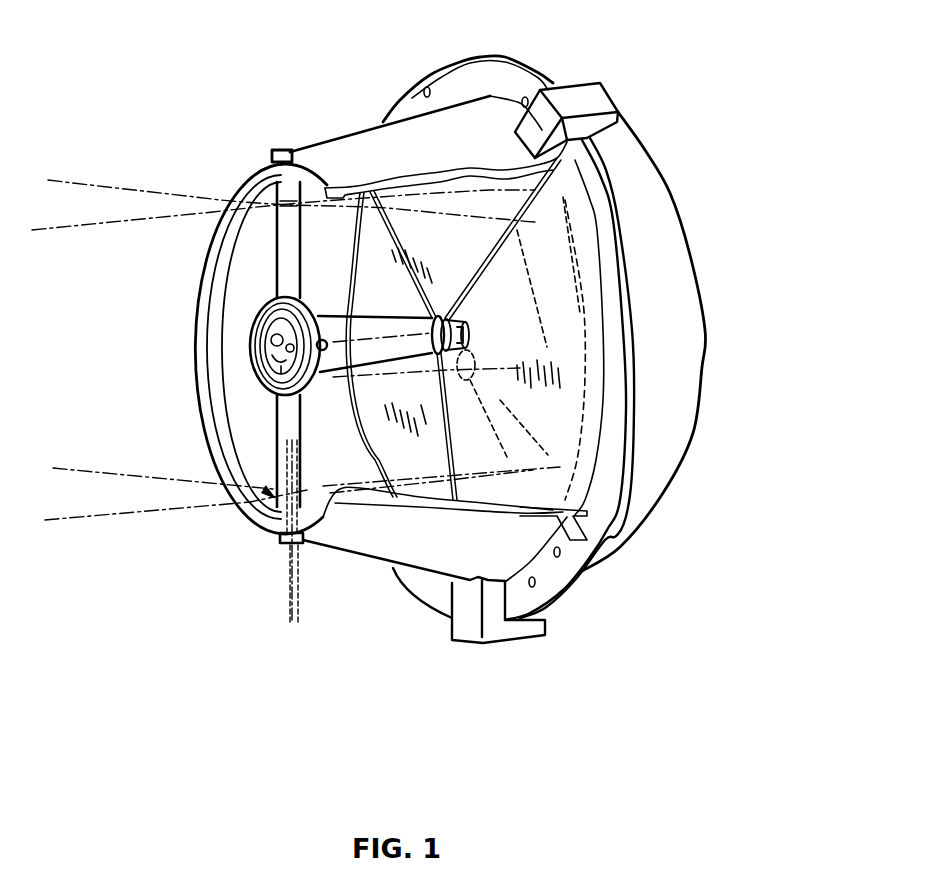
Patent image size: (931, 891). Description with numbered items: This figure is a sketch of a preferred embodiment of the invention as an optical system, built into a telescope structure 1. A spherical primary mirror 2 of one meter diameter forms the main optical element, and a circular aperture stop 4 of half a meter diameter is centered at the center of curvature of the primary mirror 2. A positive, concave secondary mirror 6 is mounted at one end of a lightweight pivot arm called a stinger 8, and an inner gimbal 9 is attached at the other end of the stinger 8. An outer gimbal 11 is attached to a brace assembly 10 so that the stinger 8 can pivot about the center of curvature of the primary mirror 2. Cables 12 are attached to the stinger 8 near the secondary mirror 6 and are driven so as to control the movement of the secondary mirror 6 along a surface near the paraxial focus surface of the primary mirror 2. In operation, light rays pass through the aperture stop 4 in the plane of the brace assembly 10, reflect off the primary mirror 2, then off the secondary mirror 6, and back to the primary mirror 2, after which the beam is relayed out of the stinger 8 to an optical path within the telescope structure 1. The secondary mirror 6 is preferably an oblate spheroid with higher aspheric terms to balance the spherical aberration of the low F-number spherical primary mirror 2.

The telescope structure 1 is at (717, 313).
The spherical primary mirror 2 is at (567, 493).
The circular aperture stop 4 is at (253, 233).
The secondary mirror 6 is at (470, 313).
The stinger 8 is at (350, 327).
The inner gimbal 9 is at (263, 300).
The brace assembly 10 is at (287, 230).
The outer gimbal 11 is at (263, 378).
The cables 12 is at (447, 440).